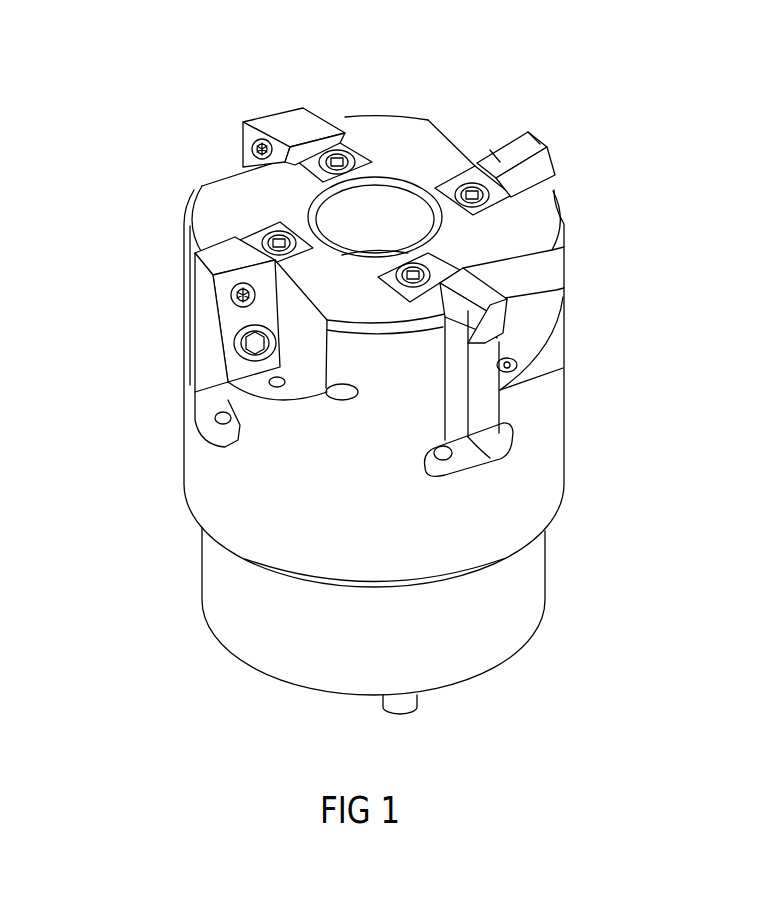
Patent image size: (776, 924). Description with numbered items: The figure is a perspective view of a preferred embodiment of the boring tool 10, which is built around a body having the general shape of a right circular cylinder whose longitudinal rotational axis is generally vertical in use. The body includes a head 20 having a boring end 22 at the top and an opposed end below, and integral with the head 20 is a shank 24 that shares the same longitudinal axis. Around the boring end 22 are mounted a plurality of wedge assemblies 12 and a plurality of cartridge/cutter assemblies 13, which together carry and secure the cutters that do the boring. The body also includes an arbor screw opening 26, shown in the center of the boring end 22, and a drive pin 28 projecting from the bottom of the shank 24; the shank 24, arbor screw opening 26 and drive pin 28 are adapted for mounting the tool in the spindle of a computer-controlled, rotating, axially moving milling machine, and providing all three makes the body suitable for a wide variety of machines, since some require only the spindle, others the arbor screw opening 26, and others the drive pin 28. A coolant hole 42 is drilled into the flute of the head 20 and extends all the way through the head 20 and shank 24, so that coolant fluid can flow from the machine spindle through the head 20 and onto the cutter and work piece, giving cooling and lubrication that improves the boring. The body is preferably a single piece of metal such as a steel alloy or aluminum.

The boring tool 10 is at (592, 461).
The wedge assembly 12 is at (255, 230).
The cartridge/cutter assembly 13 is at (287, 125).
The head 20 is at (537, 488).
The boring end 22 is at (360, 128).
The shank 24 is at (277, 640).
The arbor screw opening 26 is at (360, 225).
The drive pin 28 is at (415, 703).
The coolant hole 42 is at (277, 382).